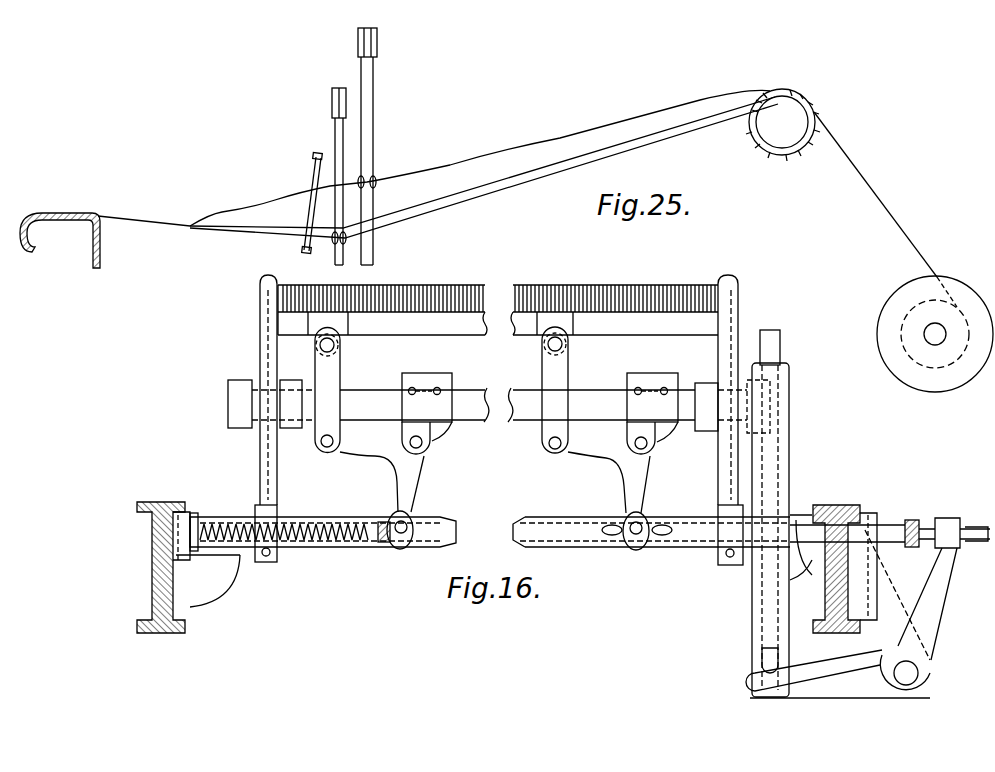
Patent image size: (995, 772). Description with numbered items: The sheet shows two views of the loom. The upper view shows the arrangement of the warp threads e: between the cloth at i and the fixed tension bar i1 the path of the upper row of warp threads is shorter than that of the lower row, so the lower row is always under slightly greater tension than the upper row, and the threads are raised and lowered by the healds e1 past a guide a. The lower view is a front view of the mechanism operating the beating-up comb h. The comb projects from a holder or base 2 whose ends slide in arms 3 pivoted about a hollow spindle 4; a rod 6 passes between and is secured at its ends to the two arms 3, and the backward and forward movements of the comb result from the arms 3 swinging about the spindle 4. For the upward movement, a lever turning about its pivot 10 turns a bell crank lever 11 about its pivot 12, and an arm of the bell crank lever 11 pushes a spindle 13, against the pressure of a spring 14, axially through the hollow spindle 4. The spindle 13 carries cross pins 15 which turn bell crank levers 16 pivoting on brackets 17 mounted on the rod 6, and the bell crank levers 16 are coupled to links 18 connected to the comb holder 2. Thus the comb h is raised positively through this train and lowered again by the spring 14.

In FIG. 25, the cloth i is at (126, 222).
In FIG. 25, the fixed tension bar i1 is at (783, 125).
In FIG. 25, the warp threads e is at (497, 157).
In FIG. 25, the healds e1 is at (340, 140).
In FIG. 25, the thread guide a is at (313, 174).
In FIG. 16, the beating-up comb h is at (678, 308).
In FIG. 16, the holder or base 2 is at (513, 332).
In FIG. 16, the arms 3 is at (262, 310).
In FIG. 16, the rod 6 is at (516, 410).
In FIG. 16, the links 18 is at (333, 367).
In FIG. 16, the brackets 17 is at (405, 383).
In FIG. 16, the bell crank levers 16 is at (409, 489).
In FIG. 16, the cross pins 15 is at (399, 545).
In FIG. 16, the spring 14 is at (332, 549).
In FIG. 16, the hollow spindle 4 is at (695, 543).
In FIG. 16, the pivot 10 is at (758, 611).
In FIG. 16, the spindle 13 is at (889, 533).
In FIG. 16, the pivot 12 is at (913, 678).
In FIG. 16, the bell crank lever 11 is at (838, 674).